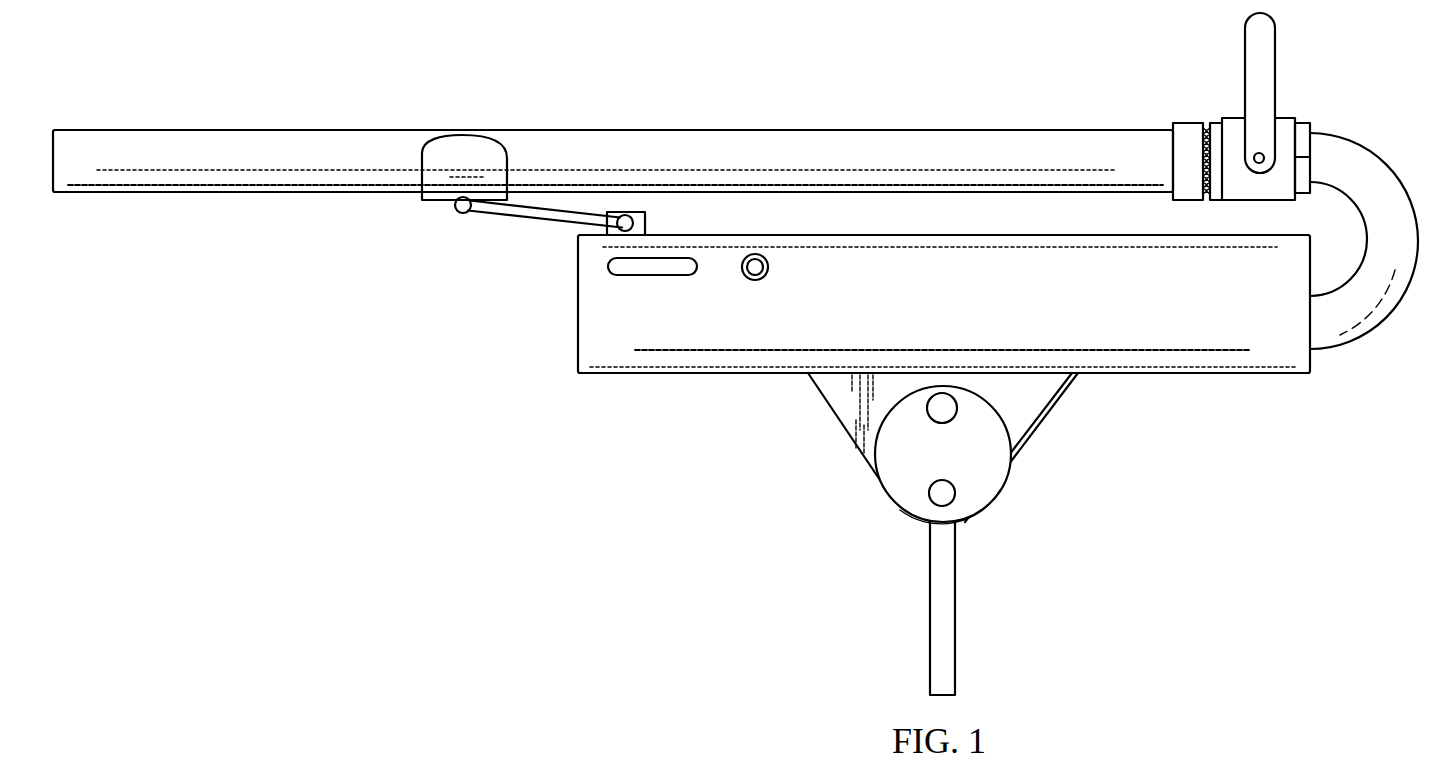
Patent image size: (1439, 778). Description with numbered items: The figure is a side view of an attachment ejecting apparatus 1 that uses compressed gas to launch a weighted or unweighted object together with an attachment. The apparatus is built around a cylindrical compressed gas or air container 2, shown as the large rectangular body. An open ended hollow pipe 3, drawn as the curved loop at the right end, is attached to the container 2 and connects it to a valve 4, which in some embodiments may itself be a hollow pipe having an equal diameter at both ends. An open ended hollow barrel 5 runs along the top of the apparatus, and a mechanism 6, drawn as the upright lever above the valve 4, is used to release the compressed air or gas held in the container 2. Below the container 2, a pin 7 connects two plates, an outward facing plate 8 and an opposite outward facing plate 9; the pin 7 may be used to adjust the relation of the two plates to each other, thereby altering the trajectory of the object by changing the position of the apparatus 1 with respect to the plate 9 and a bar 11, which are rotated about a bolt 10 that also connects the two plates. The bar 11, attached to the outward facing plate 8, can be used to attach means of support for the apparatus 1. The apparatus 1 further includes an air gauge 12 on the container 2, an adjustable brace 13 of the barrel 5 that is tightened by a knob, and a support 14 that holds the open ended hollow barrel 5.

The attachment ejecting apparatus 1 is at (440, 475).
The compressed gas or air container 2 is at (1216, 367).
The open ended hollow pipe 3 is at (1330, 345).
The valve 4 is at (1232, 118).
The open ended hollow barrel 5 is at (580, 130).
The mechanism to release compressed air or gas 6 is at (1278, 70).
The pin 7 is at (950, 420).
The outward facing plate 8 is at (898, 490).
The opposite outward facing plate 9 is at (1047, 395).
The bolt 10 is at (935, 483).
The bar 11 is at (928, 617).
The air gauge 12 is at (670, 276).
The adjustable brace 13 is at (628, 214).
The support 14 is at (438, 190).